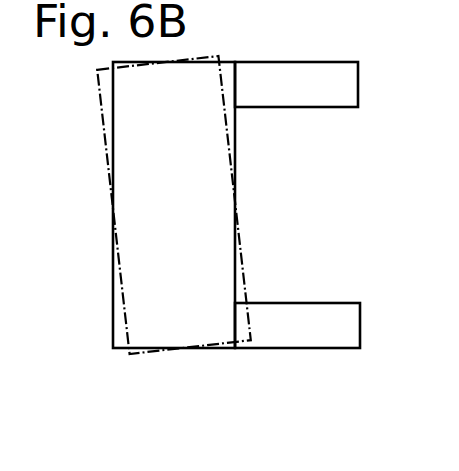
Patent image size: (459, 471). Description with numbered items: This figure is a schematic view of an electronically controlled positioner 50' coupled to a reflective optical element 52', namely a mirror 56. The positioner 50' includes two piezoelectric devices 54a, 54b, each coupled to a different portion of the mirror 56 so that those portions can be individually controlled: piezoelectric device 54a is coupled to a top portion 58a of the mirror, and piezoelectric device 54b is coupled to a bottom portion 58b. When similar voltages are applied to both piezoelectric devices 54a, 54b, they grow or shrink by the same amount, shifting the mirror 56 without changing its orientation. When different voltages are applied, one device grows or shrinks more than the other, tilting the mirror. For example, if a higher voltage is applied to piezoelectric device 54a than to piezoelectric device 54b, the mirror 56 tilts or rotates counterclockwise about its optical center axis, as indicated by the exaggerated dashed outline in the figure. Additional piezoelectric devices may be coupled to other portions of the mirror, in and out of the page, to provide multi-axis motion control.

The electronically controlled positioner 50' is at (390, 56).
The reflective optical element 52' is at (141, 205).
The piezoelectric device 54a is at (318, 97).
The piezoelectric device 54b is at (320, 340).
The mirror 56 is at (188, 234).
The top portion 58a is at (239, 50).
The bottom portion 58b is at (239, 362).